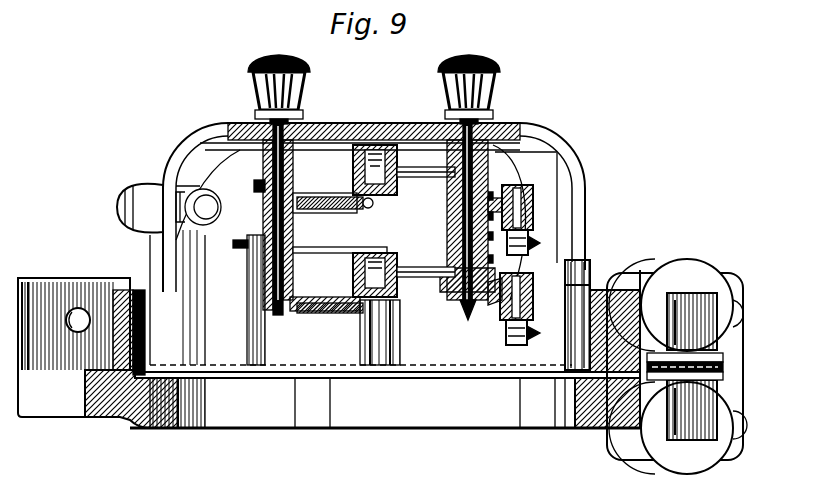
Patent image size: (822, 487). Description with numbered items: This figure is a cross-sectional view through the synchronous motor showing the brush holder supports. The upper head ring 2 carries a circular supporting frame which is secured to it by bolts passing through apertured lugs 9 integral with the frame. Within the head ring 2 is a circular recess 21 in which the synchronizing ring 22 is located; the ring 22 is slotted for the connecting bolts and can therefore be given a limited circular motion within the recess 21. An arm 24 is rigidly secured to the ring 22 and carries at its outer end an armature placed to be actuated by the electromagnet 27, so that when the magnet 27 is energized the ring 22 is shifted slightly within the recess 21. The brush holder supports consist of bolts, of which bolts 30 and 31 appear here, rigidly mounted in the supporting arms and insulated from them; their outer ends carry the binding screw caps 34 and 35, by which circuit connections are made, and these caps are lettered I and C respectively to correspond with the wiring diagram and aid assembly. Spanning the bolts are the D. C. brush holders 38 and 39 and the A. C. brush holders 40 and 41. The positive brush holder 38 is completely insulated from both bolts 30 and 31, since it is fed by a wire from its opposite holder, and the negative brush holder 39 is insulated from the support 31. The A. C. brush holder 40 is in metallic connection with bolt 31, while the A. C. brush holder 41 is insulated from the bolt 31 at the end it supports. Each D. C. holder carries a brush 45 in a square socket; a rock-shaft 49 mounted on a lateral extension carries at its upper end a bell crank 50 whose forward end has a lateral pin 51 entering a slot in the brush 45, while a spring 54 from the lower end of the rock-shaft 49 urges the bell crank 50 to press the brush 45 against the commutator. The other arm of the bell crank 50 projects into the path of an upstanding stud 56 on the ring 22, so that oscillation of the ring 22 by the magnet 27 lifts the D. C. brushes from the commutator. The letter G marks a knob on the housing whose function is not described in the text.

The head ring 2 is at (98, 420).
The apertured lug 9 is at (393, 344).
The circular recess 21 is at (462, 380).
The ring 22 is at (406, 380).
The arm 24 is at (722, 368).
The electromagnet 27 is at (677, 366).
The bolt 30 is at (293, 226).
The bolt 31 is at (447, 232).
The binding screw cap 34 is at (294, 79).
The binding screw cap 35 is at (455, 79).
The D. C. brush holder 38 is at (416, 268).
The D. C. brush holder 39 is at (505, 318).
The A. C. brush holder 40 is at (416, 168).
The A. C. brush holder 41 is at (452, 206).
The brush 45 is at (383, 252).
The rock-shaft 49 is at (520, 188).
The bell crank 50 is at (340, 256).
The lateral pin 51 is at (396, 278).
The spring 54 is at (345, 205).
The upstanding stud 56 is at (270, 322).
The knob G is at (117, 207).
The cap lettering I is at (276, 45).
The cap lettering C is at (469, 45).